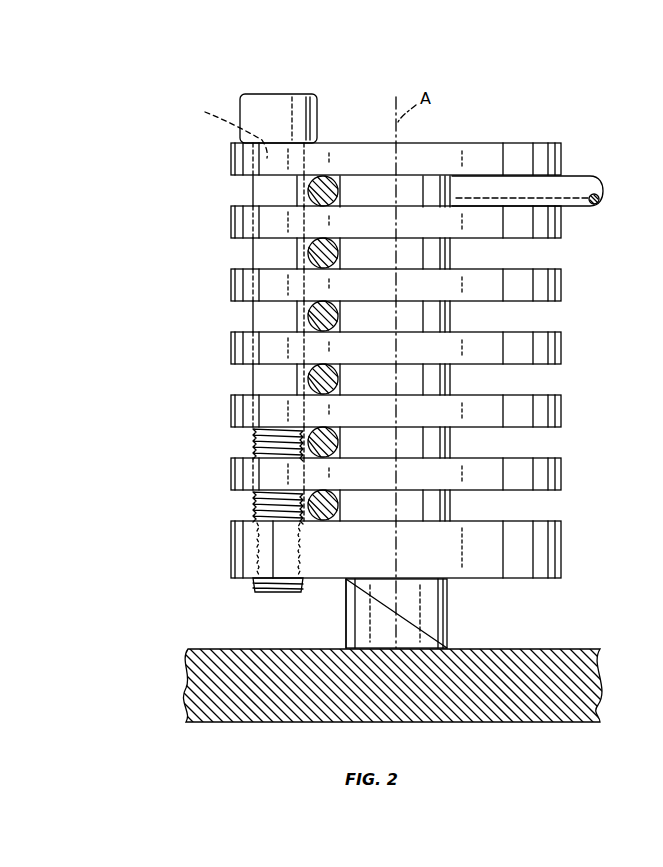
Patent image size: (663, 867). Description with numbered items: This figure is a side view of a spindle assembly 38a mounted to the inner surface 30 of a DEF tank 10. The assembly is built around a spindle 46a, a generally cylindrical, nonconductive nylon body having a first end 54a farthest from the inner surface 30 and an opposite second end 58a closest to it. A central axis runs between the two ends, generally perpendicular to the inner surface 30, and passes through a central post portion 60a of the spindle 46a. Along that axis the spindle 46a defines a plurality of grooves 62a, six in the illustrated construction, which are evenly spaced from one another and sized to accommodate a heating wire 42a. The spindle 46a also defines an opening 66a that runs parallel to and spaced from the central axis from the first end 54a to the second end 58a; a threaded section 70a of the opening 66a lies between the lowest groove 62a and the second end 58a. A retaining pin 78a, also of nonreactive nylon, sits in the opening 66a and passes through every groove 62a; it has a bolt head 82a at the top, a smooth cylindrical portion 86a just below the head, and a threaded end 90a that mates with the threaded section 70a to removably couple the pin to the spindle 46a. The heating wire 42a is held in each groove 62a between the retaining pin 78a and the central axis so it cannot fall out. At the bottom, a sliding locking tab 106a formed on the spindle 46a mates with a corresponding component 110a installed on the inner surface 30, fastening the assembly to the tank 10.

The DEF tank 10 is at (136, 662).
The inner surface 30 is at (220, 646).
The spindle assembly 38a is at (389, 329).
The heating wire 42a is at (334, 182).
The spindle 46a is at (562, 289).
The first end 54a is at (456, 143).
The second end 58a is at (546, 578).
The central post portion 60a is at (452, 316).
The grooves 62a is at (248, 202).
The opening 66a is at (217, 128).
The threaded section 70a is at (270, 546).
The retaining pin 78a is at (242, 280).
The bolt head 82a is at (290, 93).
The smooth cylindrical portion 86a is at (252, 192).
The threaded end 90a is at (258, 589).
The sliding locking tab 106a is at (449, 598).
The corresponding component 110a is at (345, 610).